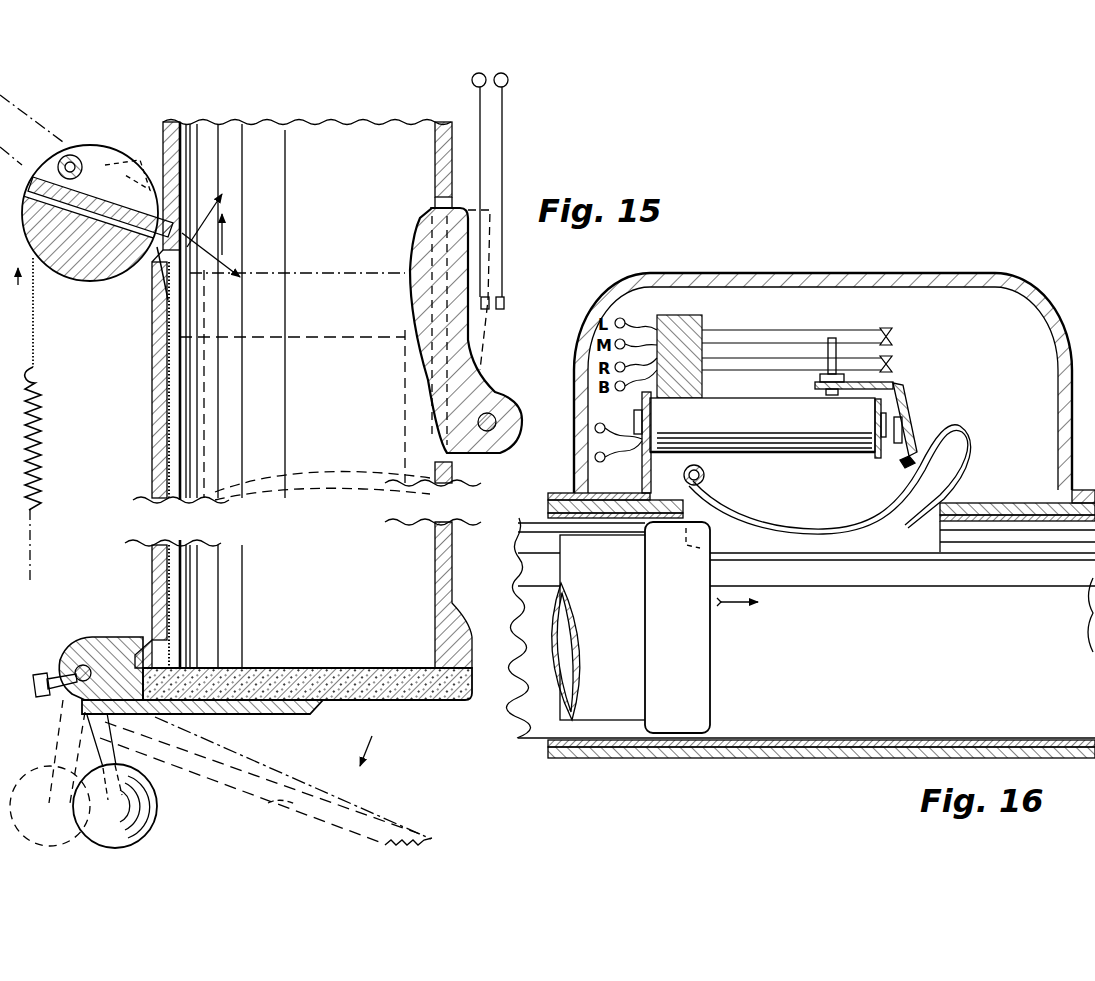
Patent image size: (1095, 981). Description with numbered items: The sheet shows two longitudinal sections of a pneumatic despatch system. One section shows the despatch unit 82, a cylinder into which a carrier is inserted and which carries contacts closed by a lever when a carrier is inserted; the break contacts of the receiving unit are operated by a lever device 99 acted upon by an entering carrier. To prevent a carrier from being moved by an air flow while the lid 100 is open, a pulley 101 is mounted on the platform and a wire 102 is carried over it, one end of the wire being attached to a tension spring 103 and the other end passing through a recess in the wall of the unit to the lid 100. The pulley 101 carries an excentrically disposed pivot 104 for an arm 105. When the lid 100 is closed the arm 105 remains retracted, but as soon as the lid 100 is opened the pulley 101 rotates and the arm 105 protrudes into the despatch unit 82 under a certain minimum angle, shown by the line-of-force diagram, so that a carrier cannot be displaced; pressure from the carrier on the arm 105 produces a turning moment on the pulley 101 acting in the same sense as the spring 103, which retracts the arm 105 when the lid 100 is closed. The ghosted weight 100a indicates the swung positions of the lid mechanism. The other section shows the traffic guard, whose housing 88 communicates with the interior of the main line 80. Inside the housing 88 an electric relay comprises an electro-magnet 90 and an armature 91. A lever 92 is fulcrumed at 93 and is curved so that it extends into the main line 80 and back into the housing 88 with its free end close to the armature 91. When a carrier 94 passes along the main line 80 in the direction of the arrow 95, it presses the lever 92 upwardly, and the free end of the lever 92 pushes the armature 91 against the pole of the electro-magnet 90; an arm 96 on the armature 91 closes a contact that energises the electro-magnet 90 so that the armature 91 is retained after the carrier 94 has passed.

In FIG. 16, the main line 80 is at (1005, 500).
In FIG. 15, the despatch unit 82 is at (441, 122).
In FIG. 16, the housing 88 is at (950, 278).
In FIG. 16, the electro-magnet 90 is at (850, 444).
In FIG. 16, the armature 91 is at (900, 397).
In FIG. 16, the lever 92 is at (968, 442).
In FIG. 16, the fulcrum 93 is at (705, 478).
In FIG. 16, the carrier 94 is at (700, 680).
In FIG. 16, the arrow 95 is at (753, 598).
In FIG. 16, the arm 96 is at (838, 340).
In FIG. 15, the lever device 99 is at (500, 402).
In FIG. 15, the lid 100 is at (415, 695).
In FIG. 15, the weight ball 100a is at (155, 800).
In FIG. 15, the pulley 101 is at (110, 272).
In FIG. 15, the wire 102 is at (37, 338).
In FIG. 15, the tension spring 103 is at (42, 432).
In FIG. 15, the pivot 104 is at (70, 158).
In FIG. 15, the arm 105 is at (105, 192).